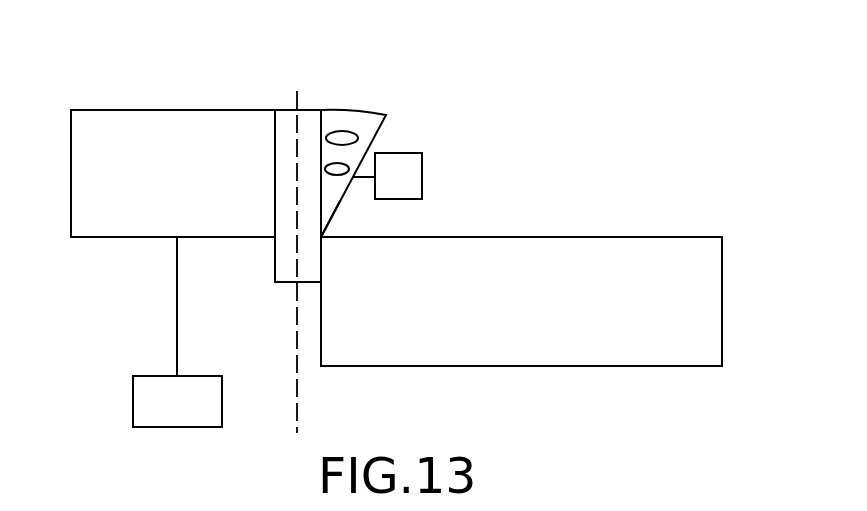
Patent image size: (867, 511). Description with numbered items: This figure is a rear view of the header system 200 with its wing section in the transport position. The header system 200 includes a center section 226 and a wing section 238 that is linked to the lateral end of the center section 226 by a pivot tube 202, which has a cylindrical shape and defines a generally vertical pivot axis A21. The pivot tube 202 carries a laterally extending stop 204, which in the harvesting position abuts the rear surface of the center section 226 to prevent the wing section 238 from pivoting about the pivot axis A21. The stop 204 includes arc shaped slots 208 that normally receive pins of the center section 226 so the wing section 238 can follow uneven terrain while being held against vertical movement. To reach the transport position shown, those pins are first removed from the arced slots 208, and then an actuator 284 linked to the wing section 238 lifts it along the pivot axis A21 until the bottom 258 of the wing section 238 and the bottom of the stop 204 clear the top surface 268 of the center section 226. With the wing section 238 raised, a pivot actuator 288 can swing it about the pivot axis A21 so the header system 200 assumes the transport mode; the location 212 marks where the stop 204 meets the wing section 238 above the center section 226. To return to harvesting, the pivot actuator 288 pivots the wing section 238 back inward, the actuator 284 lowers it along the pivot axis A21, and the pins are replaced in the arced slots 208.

The header system 200 is at (690, 150).
The pivot tube 202 is at (288, 122).
The laterally extending stop 204 is at (353, 120).
The arc shaped slots 208 is at (342, 130).
The corner junction 212 is at (321, 237).
The center section 226 is at (570, 265).
The wing section 238 is at (130, 130).
The bottom of the wing section 258 is at (203, 237).
The top surface of the center section 268 is at (453, 237).
The actuator 284 is at (133, 400).
The pivot actuator 288 is at (403, 153).
The pivot axis A21 is at (300, 413).